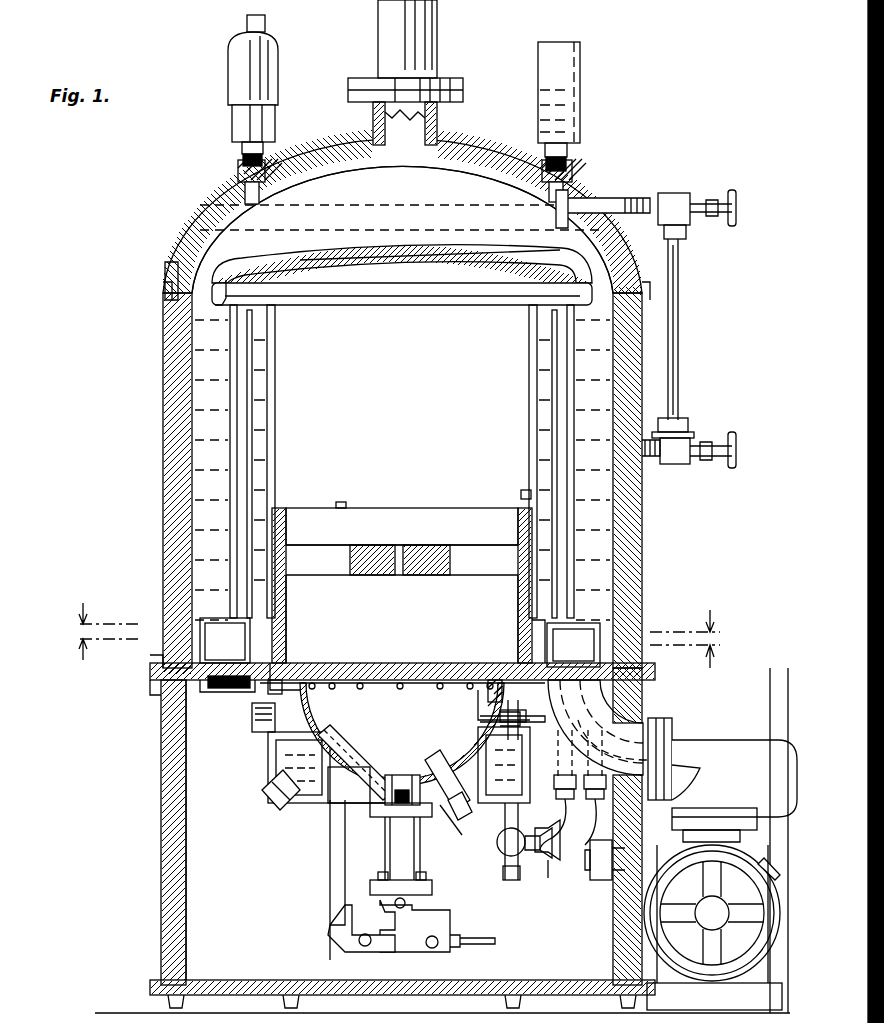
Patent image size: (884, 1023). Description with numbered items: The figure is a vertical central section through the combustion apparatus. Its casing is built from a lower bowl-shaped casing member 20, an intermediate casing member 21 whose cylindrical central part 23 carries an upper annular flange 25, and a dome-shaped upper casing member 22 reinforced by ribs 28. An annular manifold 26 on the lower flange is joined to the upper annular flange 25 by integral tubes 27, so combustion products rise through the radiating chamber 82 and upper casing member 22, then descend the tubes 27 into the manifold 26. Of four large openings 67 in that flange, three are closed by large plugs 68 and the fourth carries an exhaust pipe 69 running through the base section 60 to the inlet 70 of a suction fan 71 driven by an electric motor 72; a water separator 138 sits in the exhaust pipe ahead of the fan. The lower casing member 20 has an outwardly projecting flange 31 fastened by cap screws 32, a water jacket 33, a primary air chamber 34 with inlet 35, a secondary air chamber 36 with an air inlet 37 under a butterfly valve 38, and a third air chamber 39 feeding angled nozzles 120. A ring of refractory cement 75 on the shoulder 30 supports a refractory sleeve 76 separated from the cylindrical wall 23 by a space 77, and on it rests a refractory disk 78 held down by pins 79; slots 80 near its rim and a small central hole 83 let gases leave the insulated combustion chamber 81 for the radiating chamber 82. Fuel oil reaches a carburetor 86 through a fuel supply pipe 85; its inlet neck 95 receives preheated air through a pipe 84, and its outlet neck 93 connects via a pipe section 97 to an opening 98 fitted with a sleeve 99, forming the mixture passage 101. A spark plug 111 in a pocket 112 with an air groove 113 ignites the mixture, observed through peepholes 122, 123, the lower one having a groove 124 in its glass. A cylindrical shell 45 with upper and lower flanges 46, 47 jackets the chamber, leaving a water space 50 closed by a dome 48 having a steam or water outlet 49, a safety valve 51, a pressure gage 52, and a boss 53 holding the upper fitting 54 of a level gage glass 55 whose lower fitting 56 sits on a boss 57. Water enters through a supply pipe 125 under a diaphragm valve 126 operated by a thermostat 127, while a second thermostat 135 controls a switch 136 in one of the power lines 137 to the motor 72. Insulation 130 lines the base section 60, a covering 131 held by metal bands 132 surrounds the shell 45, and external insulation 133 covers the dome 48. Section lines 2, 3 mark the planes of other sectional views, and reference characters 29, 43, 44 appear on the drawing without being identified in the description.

The section line 2 is at (395, 651).
The section line 3 is at (390, 621).
The lower bowl-shaped casing member 20 is at (345, 758).
The intermediate casing member 21 is at (286, 434).
The upper casing member 22 is at (442, 280).
The central part 23 is at (277, 376).
The upper annular flange 25 is at (222, 300).
The annular manifold 26 is at (225, 640).
The tubes 27 is at (253, 350).
The ribs 28 is at (352, 260).
The bottom flange 29 is at (160, 672).
The shoulder 30 is at (283, 675).
The annular outwardly projecting flange 31 is at (238, 688).
The cap screws 32 is at (615, 710).
The water jacket 33 is at (268, 765).
The primary air chamber 34 is at (340, 795).
The inlet 35 is at (462, 805).
The secondary air chamber 36 is at (448, 768).
The air inlet 37 is at (452, 835).
The butterfly valve 38 is at (462, 822).
The third air inlet chamber 39 is at (292, 665).
The bowl wall 43 is at (446, 740).
The central nozzle 44 is at (398, 775).
The cylindrical shell 45 is at (628, 530).
The upper flange 46 is at (170, 272).
The lower flange 47 is at (172, 655).
The dome 48 is at (283, 178).
The steam or water outlet 49 is at (437, 34).
The space 50 is at (600, 500).
The safety valve 51 is at (272, 60).
The pressure gage 52 is at (563, 42).
The boss 53 is at (628, 198).
The upper fitting 54 is at (680, 198).
The level gage glass 55 is at (680, 264).
The lower fitting 56 is at (676, 462).
The boss 57 is at (655, 440).
The cylindrical base section 60 is at (161, 908).
The large openings 67 is at (162, 690).
The large plugs 68 is at (210, 692).
The exhaust pipe 69 is at (570, 662).
The inlet 70 is at (730, 822).
The suction fan 71 is at (714, 927).
The electric motor 72 is at (690, 955).
The ring of refractory cement 75 is at (528, 660).
The sleeve of refractory material 76 is at (486, 584).
The space 77 is at (287, 592).
The disk of refractory material 78 is at (440, 545).
The pins 79 is at (344, 500).
The slots or holes 80 is at (298, 548).
The combustion chamber 81 is at (402, 619).
The radiating chamber 82 is at (400, 426).
The central hole 83 is at (398, 580).
The pipe 84 is at (330, 880).
The fuel supply pipe 85 is at (488, 938).
The carburetor 86 is at (404, 966).
The outlet neck 93 is at (432, 890).
The inlet neck 95 is at (352, 952).
The pipe section 97 is at (390, 866).
The opening 98 is at (400, 822).
The sleeve 99 is at (385, 846).
The passage 101 is at (402, 790).
The spark plug 111 is at (548, 718).
The pocket 112 is at (488, 692).
The groove 113 is at (520, 728).
The nozzles 120 is at (318, 688).
The peephole 122 is at (255, 730).
The peephole 123 is at (275, 808).
The slot or groove 124 is at (325, 750).
The water supply pipe 125 is at (508, 880).
The diaphragm valve 126 is at (550, 872).
The thermostat 127 is at (558, 800).
The lining of insulation 130 is at (180, 896).
The covering of insulating material 131 is at (185, 476).
The metal bands 132 is at (165, 288).
The external insulation 133 is at (474, 152).
The second thermostat 135 is at (676, 728).
The switch 136 is at (600, 880).
The power lines 137 is at (770, 700).
The water separator 138 is at (752, 760).